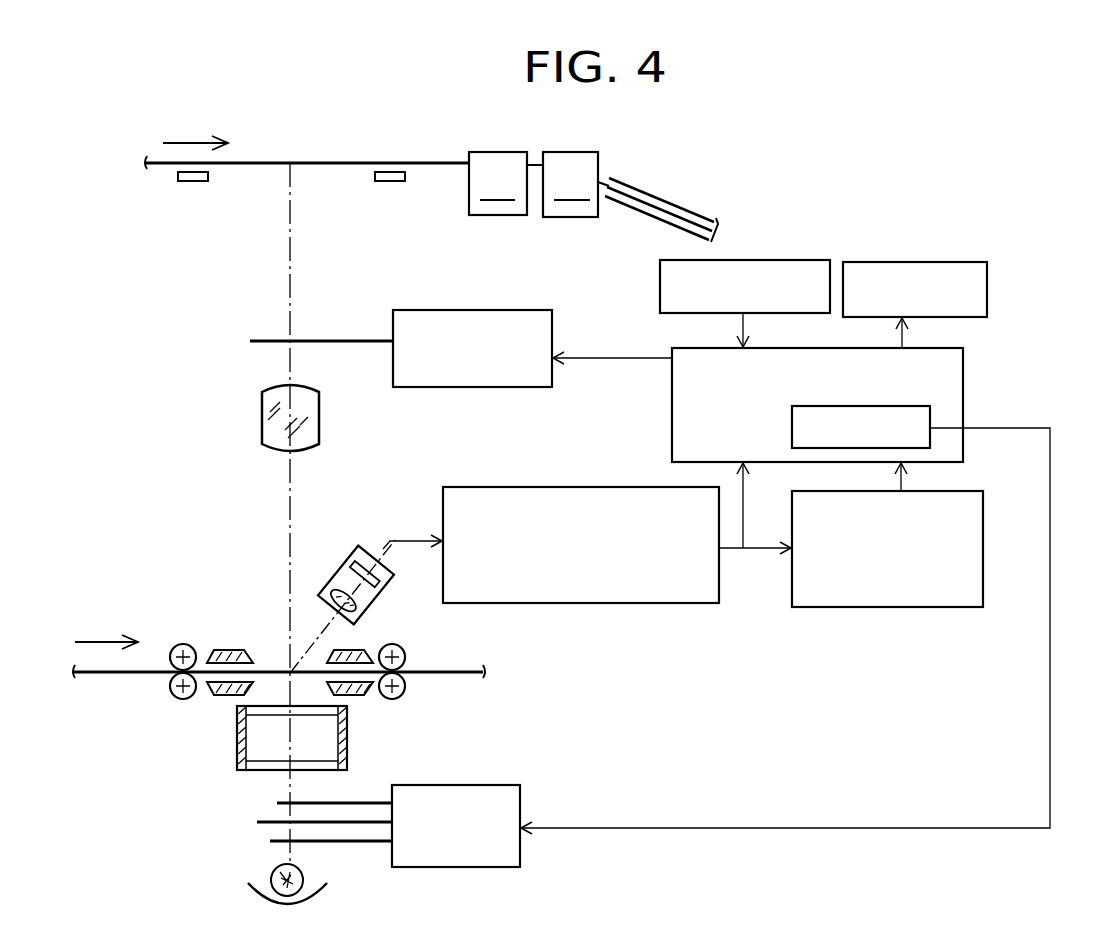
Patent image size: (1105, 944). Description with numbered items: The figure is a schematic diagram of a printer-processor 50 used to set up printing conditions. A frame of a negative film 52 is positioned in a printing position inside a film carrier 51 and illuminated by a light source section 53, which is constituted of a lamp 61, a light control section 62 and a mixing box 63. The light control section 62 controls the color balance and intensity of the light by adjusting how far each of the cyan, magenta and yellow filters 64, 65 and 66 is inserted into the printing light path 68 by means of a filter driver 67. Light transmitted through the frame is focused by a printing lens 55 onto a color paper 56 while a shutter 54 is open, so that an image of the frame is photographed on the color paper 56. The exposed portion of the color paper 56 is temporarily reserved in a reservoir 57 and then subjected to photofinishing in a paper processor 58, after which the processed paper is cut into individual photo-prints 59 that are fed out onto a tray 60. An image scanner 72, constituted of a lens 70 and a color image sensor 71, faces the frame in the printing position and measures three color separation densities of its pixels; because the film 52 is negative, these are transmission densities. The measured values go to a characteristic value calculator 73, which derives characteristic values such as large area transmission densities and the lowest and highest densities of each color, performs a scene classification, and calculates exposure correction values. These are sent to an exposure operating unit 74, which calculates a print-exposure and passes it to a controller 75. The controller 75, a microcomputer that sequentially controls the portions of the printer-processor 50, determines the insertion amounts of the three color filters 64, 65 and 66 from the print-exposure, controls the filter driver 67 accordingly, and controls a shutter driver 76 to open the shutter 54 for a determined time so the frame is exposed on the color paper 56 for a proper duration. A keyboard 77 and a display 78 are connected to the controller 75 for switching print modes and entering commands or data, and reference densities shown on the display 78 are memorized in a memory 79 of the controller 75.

The printer-processor 50 is at (180, 406).
The film carrier 51 is at (218, 700).
The negative film 52 is at (110, 676).
The light source section 53 is at (215, 869).
The shutter 54 is at (345, 341).
The printing lens 55 is at (319, 418).
The color paper 56 is at (348, 163).
The reservoir 57 is at (498, 183).
The paper processor 58 is at (570, 184).
The photo-print 59 is at (678, 208).
The tray 60 is at (631, 208).
The lamp 61 is at (303, 876).
The light control section 62 is at (489, 770).
The mixing box 63 is at (347, 725).
The cyan filter 64 is at (378, 845).
The magenta filter 65 is at (275, 819).
The yellow filter 66 is at (372, 803).
The filter driver 67 is at (520, 800).
The printing light path 68 is at (290, 484).
The lens 70 is at (360, 622).
The color image sensor 71 is at (380, 592).
The image scanner 72 is at (379, 533).
The characteristic value calculator 73 is at (570, 487).
The exposure operating unit 74 is at (882, 608).
The controller 75 is at (963, 365).
The shutter driver 76 is at (465, 310).
The keyboard 77 is at (748, 260).
The display 78 is at (893, 262).
The memory 79 is at (930, 418).